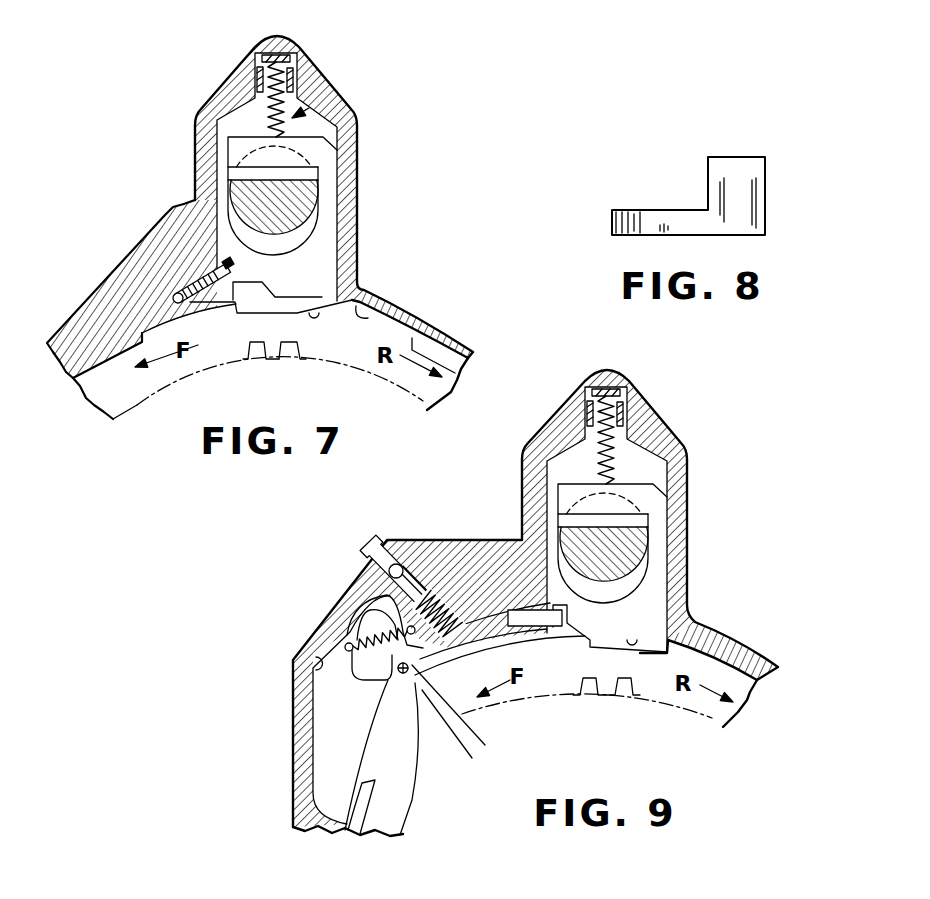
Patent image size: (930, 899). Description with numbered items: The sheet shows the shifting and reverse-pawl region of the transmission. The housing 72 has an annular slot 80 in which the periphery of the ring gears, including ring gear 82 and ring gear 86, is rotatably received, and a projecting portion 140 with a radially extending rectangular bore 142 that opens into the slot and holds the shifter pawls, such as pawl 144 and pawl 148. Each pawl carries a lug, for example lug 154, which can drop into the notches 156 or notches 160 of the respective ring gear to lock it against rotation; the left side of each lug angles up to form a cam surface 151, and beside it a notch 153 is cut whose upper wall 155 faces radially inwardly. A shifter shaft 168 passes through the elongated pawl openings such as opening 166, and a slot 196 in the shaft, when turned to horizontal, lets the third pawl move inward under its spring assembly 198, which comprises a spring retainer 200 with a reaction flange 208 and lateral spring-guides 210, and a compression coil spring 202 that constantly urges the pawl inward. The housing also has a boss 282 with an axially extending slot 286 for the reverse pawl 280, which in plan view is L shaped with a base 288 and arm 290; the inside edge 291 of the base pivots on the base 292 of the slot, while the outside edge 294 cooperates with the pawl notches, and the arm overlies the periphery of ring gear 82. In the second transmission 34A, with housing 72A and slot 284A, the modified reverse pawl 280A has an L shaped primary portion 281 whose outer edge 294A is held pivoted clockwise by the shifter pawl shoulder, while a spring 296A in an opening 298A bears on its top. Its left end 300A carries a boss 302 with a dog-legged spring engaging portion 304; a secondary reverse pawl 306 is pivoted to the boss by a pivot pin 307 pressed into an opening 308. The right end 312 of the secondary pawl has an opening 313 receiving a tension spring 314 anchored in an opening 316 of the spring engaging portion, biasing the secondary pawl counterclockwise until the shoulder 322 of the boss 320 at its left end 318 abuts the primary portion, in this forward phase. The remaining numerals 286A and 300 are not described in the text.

In FIG. 9, the transmission 34A is at (733, 402).
In FIG. 7, the two-piece housing 72 is at (440, 330).
In FIG. 9, the housing 72A is at (425, 540).
In FIG. 7, the annular slot 80 is at (375, 312).
In FIG. 9, the ring gear 82 is at (713, 720).
In FIG. 7, the ring gear 86 is at (132, 397).
In FIG. 7, the projecting portion 140 is at (358, 118).
In FIG. 7, the rectangular bore 142 is at (340, 128).
In FIG. 9, the shifter pawl 144 is at (667, 505).
In FIG. 7, the shifter pawl 148 is at (336, 232).
In FIG. 7, the cam surface 151 is at (270, 350).
In FIG. 7, the notch 153 is at (239, 296).
In FIG. 9, the notch 153 is at (513, 572).
In FIG. 7, the lug 154 is at (302, 345).
In FIG. 7, the upper wall 155 is at (273, 245).
In FIG. 9, the notches 156 is at (643, 657).
In FIG. 7, the notches 160 is at (80, 388).
In FIG. 7, the opening 166 is at (232, 176).
In FIG. 7, the shifter shaft 168 is at (308, 200).
In FIG. 7, the slot 196 is at (312, 166).
In FIG. 7, the spring assembly 198 is at (340, 84).
In FIG. 7, the spring retainer 200 is at (238, 75).
In FIG. 7, the compression coil spring 202 is at (270, 127).
In FIG. 7, the reaction flange 208 is at (270, 56).
In FIG. 9, the reaction flange 208 is at (606, 392).
In FIG. 7, the lateral spring-guides 210 is at (298, 77).
In FIG. 7, the reverse pawl 280 is at (213, 307).
In FIG. 8, the reverse pawl 280 is at (792, 135).
In FIG. 9, the reverse pawl 280A is at (526, 649).
In FIG. 9, the primary portion 281 is at (476, 601).
In FIG. 7, the boss 282 is at (165, 213).
In FIG. 9, the slot 284A is at (345, 655).
In FIG. 7, the axially extending slot 286 is at (207, 319).
In FIG. 9, the pawl 286A is at (612, 543).
In FIG. 7, the base 288 is at (200, 283).
In FIG. 8, the base 288 is at (760, 183).
In FIG. 8, the arm 290 is at (667, 230).
In FIG. 7, the inside edge 291 is at (174, 297).
In FIG. 8, the inside edge 291 is at (706, 185).
In FIG. 7, the base of the slot 292 is at (200, 305).
In FIG. 7, the outside edge 294 is at (233, 270).
In FIG. 8, the outside edge 294 is at (765, 225).
In FIG. 9, the outer edge 294A is at (520, 540).
In FIG. 9, the spring 296A is at (410, 542).
In FIG. 9, the opening 298A is at (397, 543).
In FIG. 8, the lever end 300 is at (610, 222).
In FIG. 9, the left end 300A is at (420, 790).
In FIG. 9, the boss 302 is at (455, 725).
In FIG. 9, the spring engaging portion 304 is at (340, 640).
In FIG. 9, the secondary reverse pawl 306 is at (382, 730).
In FIG. 9, the pivot pin 307 is at (392, 682).
In FIG. 9, the opening 308 is at (440, 745).
In FIG. 9, the right end 312 is at (470, 720).
In FIG. 9, the opening 313 is at (385, 560).
In FIG. 9, the tension spring 314 is at (390, 585).
In FIG. 9, the opening 316 is at (353, 645).
In FIG. 9, the left end 318 is at (313, 741).
In FIG. 9, the boss 320 is at (415, 810).
In FIG. 9, the shoulder 322 is at (376, 723).